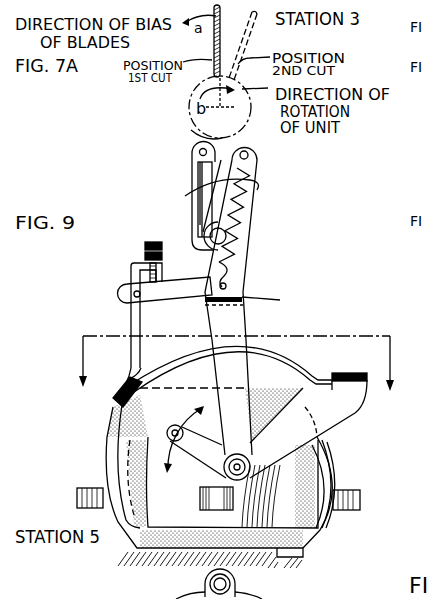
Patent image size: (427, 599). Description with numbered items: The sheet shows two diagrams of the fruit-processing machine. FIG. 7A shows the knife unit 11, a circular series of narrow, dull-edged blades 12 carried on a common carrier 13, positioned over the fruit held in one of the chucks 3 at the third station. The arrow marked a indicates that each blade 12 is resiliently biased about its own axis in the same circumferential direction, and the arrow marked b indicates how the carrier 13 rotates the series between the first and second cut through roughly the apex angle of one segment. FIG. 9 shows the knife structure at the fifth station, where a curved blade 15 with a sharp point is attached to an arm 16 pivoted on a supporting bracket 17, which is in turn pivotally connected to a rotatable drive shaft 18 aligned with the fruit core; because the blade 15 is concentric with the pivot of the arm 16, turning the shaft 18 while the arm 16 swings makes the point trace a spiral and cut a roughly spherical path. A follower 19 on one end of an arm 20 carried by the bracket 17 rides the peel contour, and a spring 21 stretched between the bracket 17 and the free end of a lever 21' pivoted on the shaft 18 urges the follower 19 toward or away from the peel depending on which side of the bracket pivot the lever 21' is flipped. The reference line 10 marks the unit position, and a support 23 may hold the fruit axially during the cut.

In FIG. 9, the chucks 3 is at (345, 466).
In FIG. 9, the reference line of unit travel 10 is at (237, 376).
In FIG. 7A, the knife unit 11 is at (188, 131).
In FIG. 7A, the blades 12 is at (212, 46).
In FIG. 7A, the carrier 13 is at (188, 97).
In FIG. 9, the curved blade 15 is at (190, 360).
In FIG. 9, the arm 16 is at (343, 415).
In FIG. 9, the supporting bracket 17 is at (235, 318).
In FIG. 9, the drive shaft 18 is at (196, 205).
In FIG. 9, the follower 19 is at (118, 400).
In FIG. 9, the arm 20 is at (131, 319).
In FIG. 9, the spring 21 is at (261, 228).
In FIG. 9, the lever 21' is at (240, 177).
In FIG. 9, the support 23 is at (263, 567).